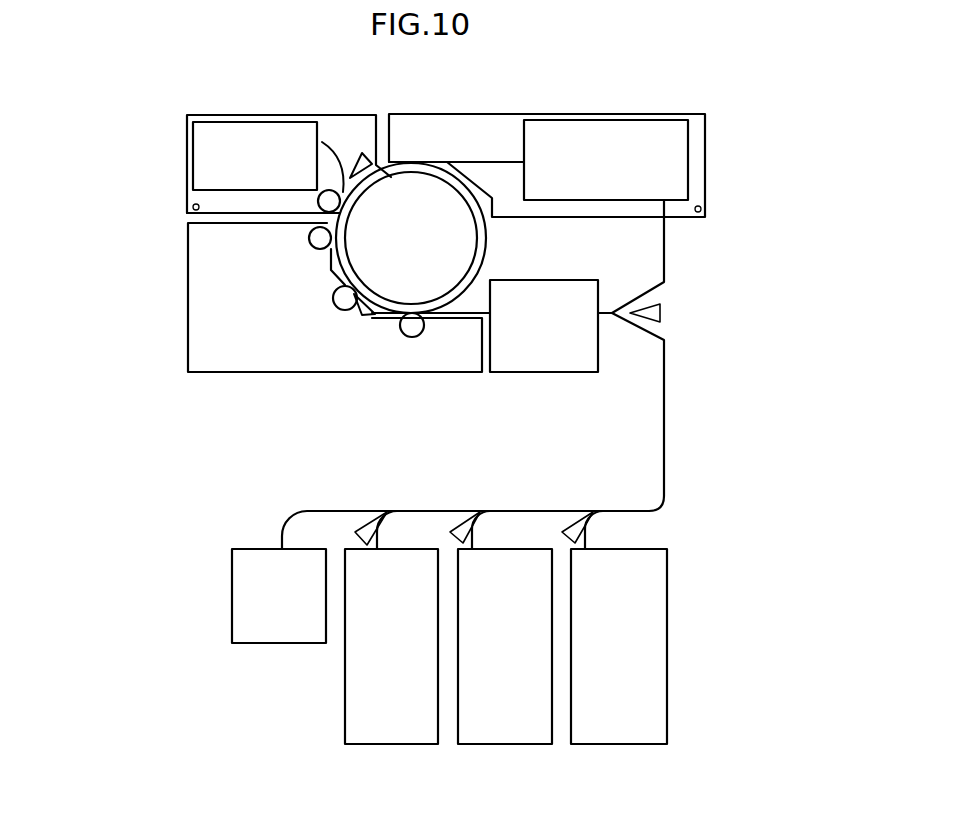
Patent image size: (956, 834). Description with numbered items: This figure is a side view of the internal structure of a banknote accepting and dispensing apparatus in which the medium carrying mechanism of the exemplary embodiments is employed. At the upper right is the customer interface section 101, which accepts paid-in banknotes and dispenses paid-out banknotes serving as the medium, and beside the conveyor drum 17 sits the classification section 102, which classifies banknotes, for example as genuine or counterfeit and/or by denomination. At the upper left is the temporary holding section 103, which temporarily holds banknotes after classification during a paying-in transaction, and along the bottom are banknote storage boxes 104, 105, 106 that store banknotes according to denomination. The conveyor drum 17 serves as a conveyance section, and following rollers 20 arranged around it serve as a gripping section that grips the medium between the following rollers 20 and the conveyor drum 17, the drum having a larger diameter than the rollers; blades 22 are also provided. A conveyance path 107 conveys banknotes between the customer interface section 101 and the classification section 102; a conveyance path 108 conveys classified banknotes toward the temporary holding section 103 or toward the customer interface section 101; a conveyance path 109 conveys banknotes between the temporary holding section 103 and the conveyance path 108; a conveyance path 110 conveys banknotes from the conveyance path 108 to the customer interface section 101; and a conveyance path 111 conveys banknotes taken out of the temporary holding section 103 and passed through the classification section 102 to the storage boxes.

The conveyor drum 17 is at (468, 242).
The following rollers 20 is at (318, 201).
The blades 22 is at (366, 155).
The customer interface section 101 is at (688, 153).
The classification section 102 is at (582, 372).
The temporary holding section 103 is at (187, 145).
The banknote storage box 104 is at (637, 651).
The banknote storage box 105 is at (524, 651).
The banknote storage box 106 is at (411, 651).
The conveyance path 107 is at (664, 245).
The conveyance path 108 is at (370, 316).
The conveyance path 109 is at (323, 140).
The conveyance path 110 is at (486, 162).
The conveyance path 111 is at (520, 510).